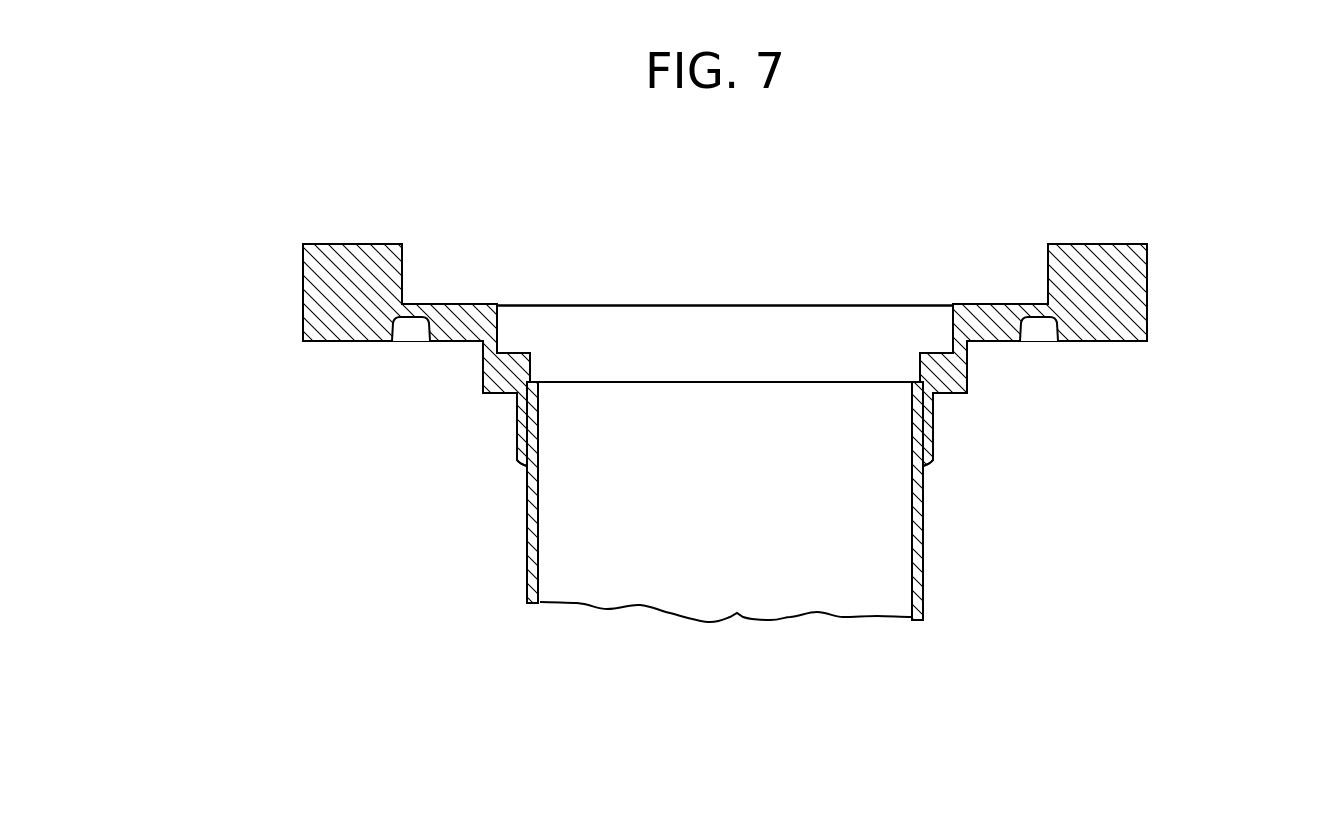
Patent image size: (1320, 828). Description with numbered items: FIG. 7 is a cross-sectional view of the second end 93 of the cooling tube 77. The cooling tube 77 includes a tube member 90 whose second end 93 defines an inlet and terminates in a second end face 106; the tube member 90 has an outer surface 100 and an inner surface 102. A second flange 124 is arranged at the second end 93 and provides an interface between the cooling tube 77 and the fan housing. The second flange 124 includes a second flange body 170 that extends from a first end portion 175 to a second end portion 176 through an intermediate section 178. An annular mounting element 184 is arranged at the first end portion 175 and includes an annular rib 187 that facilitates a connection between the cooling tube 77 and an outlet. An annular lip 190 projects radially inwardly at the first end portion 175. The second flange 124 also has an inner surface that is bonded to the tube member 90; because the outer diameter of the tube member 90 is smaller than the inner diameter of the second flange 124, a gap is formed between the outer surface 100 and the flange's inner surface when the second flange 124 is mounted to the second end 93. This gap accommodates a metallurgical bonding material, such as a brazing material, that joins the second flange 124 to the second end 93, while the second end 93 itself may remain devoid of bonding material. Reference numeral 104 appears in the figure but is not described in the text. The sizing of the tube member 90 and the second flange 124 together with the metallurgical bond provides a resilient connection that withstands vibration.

The cooling tube 77 is at (440, 582).
The tube member 90 is at (990, 603).
The second end 93 is at (540, 422).
The outer surface 100 is at (940, 535).
The inner surface 102 is at (545, 523).
The flange plate 104 is at (997, 290).
The second end face 106 is at (917, 381).
The second flange 124 is at (250, 260).
The second flange body 170 is at (982, 378).
The first end portion 175 is at (455, 303).
The second end portion 176 is at (520, 462).
The intermediate section 178 is at (483, 370).
The annular mounting element 184 is at (1130, 322).
The annular rib 187 is at (1100, 242).
The annular lip 190 is at (532, 363).